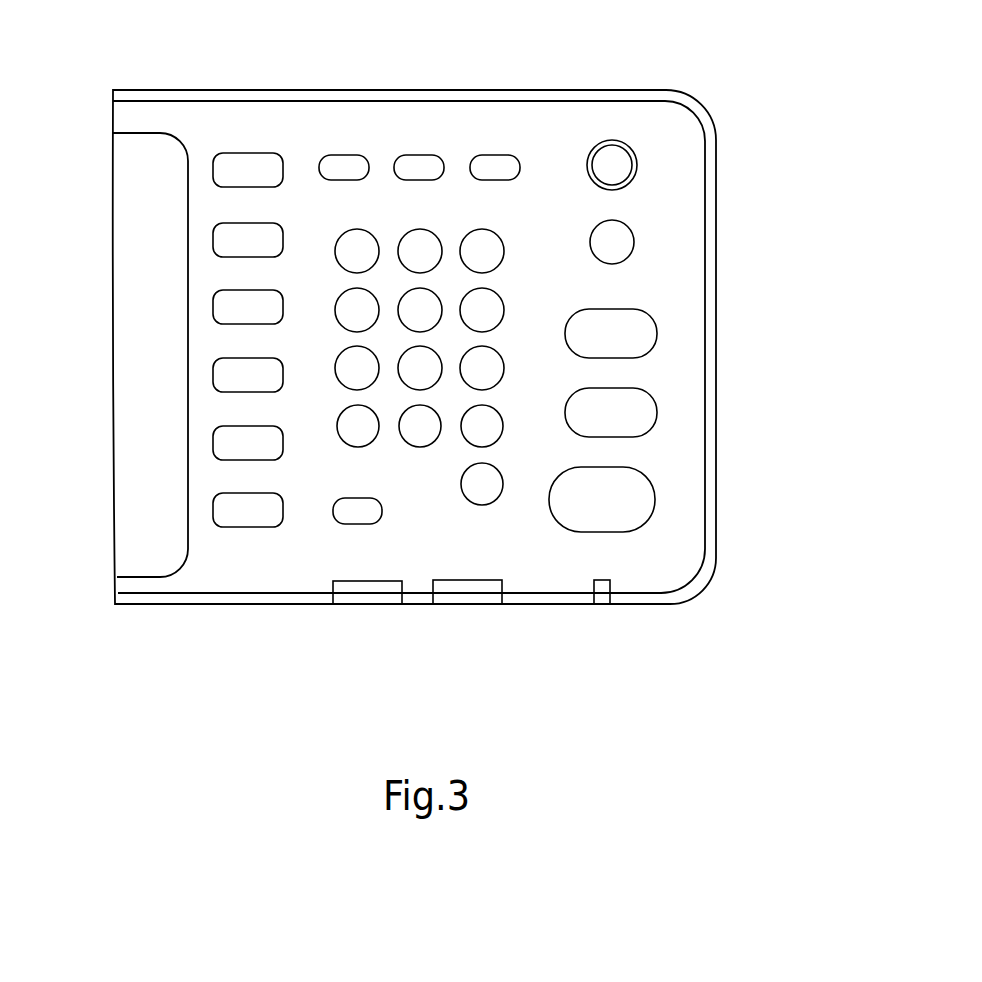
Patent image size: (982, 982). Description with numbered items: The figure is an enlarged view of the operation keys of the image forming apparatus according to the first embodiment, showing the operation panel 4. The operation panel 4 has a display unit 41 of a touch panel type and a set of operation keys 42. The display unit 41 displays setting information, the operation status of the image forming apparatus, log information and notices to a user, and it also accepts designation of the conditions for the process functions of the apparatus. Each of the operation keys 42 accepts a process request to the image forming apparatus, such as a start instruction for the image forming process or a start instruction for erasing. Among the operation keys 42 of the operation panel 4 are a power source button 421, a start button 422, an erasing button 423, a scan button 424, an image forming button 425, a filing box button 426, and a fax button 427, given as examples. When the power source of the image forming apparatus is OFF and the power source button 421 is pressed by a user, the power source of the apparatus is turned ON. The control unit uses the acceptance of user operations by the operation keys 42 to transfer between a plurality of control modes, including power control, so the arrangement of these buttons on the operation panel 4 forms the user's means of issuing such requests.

The operation panel 4 is at (546, 88).
The display unit 41 is at (147, 133).
The operation keys 42 is at (213, 168).
The power source button 421 is at (637, 168).
The start button 422 is at (655, 500).
The erasing button 423 is at (281, 226).
The scan button 424 is at (213, 307).
The image forming button 425 is at (213, 375).
The filing box button 426 is at (213, 443).
The fax button 427 is at (213, 510).